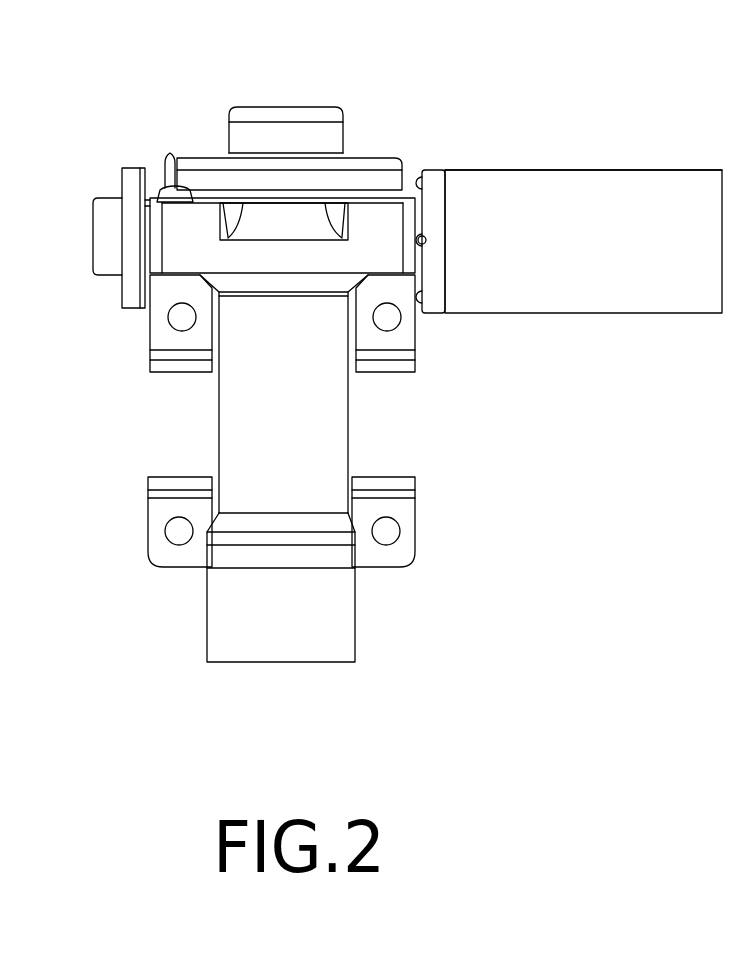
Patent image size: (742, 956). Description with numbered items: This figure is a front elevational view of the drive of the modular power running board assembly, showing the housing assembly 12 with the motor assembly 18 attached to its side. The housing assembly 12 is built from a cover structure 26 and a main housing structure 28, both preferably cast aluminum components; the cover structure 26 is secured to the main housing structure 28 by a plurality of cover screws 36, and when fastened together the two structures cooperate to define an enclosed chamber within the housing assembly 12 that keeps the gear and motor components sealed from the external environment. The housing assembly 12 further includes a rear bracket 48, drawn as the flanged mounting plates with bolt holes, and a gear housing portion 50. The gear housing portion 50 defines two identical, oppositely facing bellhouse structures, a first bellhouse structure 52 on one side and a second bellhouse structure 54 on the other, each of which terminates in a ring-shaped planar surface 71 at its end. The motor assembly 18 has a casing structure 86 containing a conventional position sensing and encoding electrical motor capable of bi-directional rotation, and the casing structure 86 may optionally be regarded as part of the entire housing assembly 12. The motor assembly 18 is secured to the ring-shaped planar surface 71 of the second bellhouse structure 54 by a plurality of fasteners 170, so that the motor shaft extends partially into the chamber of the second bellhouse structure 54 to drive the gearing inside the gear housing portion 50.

The housing assembly 12 is at (353, 425).
The motor assembly 18 is at (562, 307).
The cover structure 26 is at (338, 130).
The main housing structure 28 is at (232, 425).
The cover screws 36 is at (172, 156).
The rear bracket 48 is at (400, 330).
The gear housing portion 50 is at (190, 256).
The first bellhouse structure 52 is at (130, 174).
The second bellhouse structure 54 is at (437, 177).
The ring-shaped planar surface 71 is at (115, 288).
The casing structure 86 is at (690, 178).
The fasteners 170 is at (422, 240).